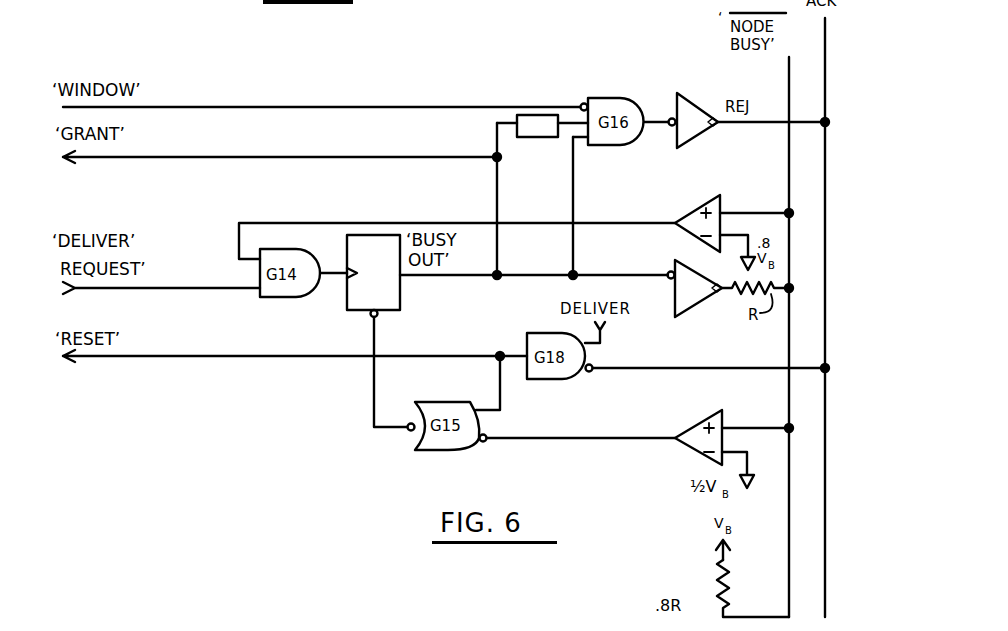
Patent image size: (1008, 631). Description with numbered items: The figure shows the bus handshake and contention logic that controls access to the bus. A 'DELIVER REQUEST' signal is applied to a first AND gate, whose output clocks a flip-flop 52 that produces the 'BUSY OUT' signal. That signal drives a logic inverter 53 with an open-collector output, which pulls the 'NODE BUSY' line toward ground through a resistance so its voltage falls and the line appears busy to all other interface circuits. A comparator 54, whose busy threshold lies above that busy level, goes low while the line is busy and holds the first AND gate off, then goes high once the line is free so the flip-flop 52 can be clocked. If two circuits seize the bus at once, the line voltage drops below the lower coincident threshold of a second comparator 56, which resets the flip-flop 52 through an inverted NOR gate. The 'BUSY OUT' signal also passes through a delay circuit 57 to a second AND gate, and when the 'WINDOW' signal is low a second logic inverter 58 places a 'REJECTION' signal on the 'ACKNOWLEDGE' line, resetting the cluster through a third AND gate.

The flip-flop 52 is at (346, 311).
The logic inverter 53 is at (699, 298).
The comparator 54 is at (692, 208).
The comparator 56 is at (694, 426).
The delay circuit 57 is at (542, 139).
The logic inverter 58 is at (700, 130).